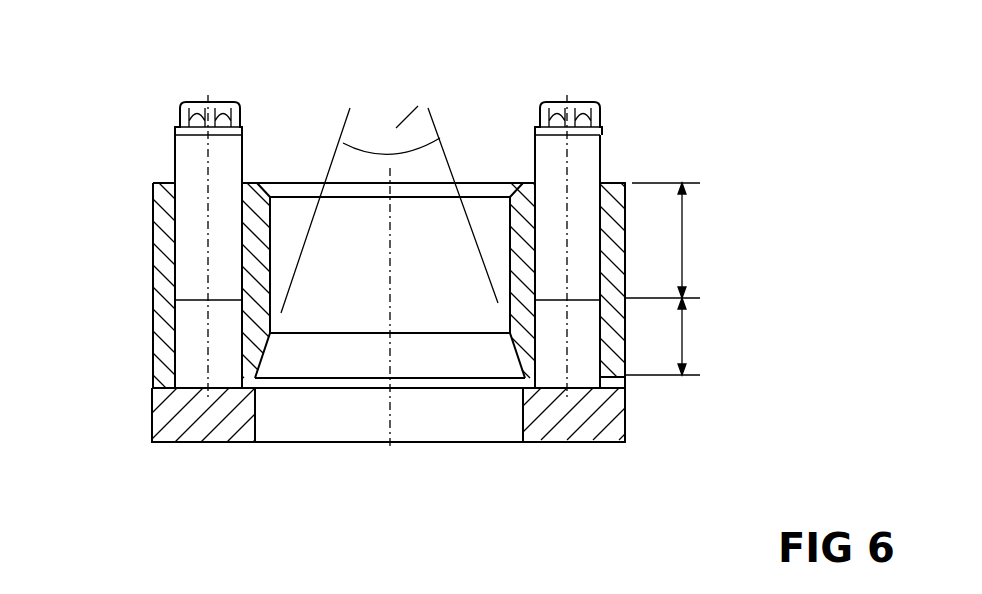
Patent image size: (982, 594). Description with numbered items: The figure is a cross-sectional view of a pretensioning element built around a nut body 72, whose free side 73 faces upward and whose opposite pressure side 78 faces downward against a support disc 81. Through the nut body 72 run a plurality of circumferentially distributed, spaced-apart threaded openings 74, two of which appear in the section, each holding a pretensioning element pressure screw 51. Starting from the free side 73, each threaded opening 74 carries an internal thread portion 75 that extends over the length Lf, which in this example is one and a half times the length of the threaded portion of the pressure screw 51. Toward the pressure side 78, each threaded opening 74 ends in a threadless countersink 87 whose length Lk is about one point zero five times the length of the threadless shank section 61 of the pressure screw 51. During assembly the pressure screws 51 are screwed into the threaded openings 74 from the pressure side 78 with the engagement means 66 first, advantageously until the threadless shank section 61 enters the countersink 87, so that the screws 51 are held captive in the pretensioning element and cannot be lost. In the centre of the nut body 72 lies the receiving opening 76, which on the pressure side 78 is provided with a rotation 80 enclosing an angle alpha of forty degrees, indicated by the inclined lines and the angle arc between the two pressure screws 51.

The pretensioning element pressure screw 51 is at (135, 126).
The threadless shank section 61 is at (240, 412).
The engagement means 66 is at (228, 100).
The nut body 72 is at (632, 228).
The free side of nut body 73 is at (612, 182).
The threaded opening 74 is at (150, 293).
The internal thread portion 75 is at (192, 248).
The receiving opening 76 is at (433, 300).
The pressure side of nut body 78 is at (615, 402).
The rotation 80 is at (273, 350).
The support disc 81 is at (200, 435).
The countersink 87 is at (192, 340).